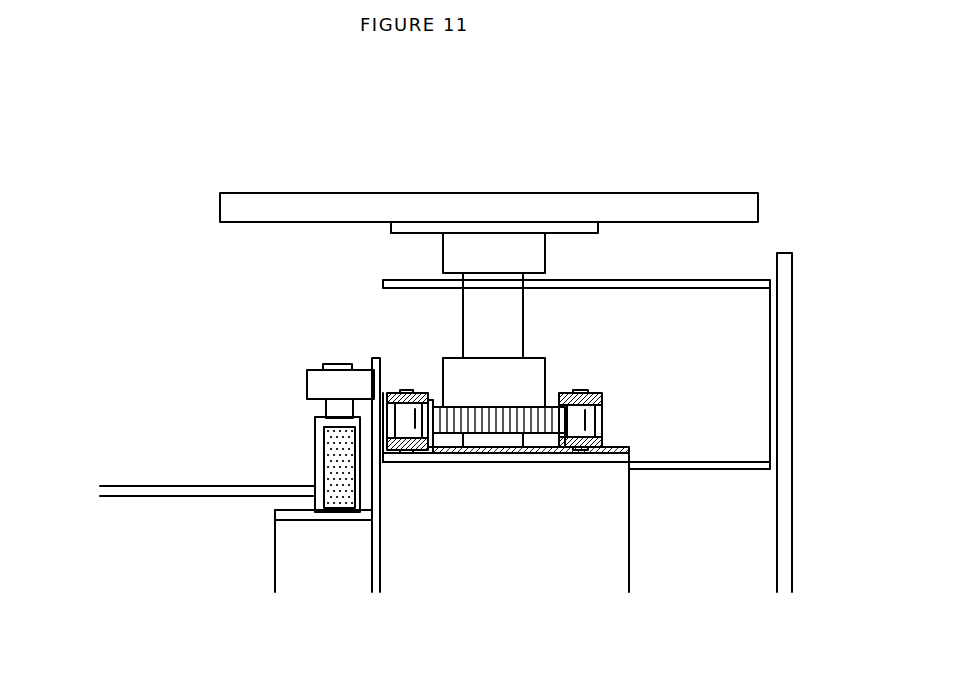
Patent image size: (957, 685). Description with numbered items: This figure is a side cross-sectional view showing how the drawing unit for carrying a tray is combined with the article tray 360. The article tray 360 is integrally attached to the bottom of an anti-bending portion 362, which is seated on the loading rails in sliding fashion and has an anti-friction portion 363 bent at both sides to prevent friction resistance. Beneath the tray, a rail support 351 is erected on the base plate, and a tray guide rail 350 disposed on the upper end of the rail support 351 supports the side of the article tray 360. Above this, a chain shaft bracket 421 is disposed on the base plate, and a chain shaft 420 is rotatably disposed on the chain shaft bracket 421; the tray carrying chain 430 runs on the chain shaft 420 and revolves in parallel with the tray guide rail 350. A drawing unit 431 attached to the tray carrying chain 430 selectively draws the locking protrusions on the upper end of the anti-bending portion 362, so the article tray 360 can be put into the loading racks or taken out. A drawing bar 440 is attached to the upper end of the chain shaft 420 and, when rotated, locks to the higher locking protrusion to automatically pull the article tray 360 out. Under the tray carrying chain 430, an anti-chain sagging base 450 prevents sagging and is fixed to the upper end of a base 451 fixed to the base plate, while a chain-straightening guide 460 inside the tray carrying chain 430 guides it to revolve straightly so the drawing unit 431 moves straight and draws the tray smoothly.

The drawing bar 440 is at (402, 200).
The chain shaft 420 is at (492, 308).
The chain shaft bracket 421 is at (662, 283).
The tray carrying chain 430 is at (403, 392).
The drawing unit 431 is at (322, 385).
The chain-straightening guide 460 is at (480, 450).
The anti-chain sagging base 450 is at (615, 450).
The base 451 is at (597, 533).
The tray guide rail 350 is at (377, 500).
The rail support 351 is at (310, 559).
The article tray 360 is at (137, 495).
The anti-bending portion 362 is at (317, 438).
The anti-friction portion 363 is at (342, 485).